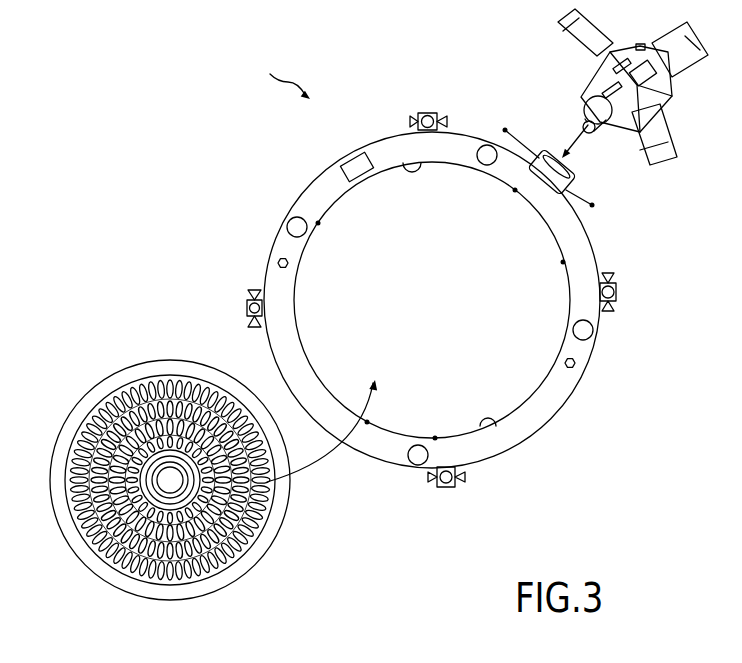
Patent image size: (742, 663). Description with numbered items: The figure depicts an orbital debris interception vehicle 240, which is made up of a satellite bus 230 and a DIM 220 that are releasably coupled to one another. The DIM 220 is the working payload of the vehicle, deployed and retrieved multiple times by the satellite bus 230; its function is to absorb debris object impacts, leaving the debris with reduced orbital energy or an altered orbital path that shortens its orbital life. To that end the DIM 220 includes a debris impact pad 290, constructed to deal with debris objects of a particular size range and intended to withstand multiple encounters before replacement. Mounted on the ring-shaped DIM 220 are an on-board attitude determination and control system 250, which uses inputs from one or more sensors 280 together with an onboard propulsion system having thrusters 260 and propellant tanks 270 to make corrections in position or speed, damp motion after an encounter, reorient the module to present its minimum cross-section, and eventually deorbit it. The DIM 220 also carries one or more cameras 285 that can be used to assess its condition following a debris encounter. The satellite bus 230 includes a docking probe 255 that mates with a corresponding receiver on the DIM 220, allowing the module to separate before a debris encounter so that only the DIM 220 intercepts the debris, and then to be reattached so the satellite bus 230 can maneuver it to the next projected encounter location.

The DIM 220 is at (300, 195).
The satellite bus 230 is at (668, 100).
The orbital debris interception vehicle 240 is at (276, 76).
The on-board attitude determination and control system 250 is at (348, 160).
The docking probe 255 is at (598, 125).
The thrusters 260 is at (247, 307).
The propellant tanks 270 is at (590, 330).
The sensors 280 is at (482, 146).
The cameras 285 is at (412, 163).
The debris impact pad 290 is at (120, 374).